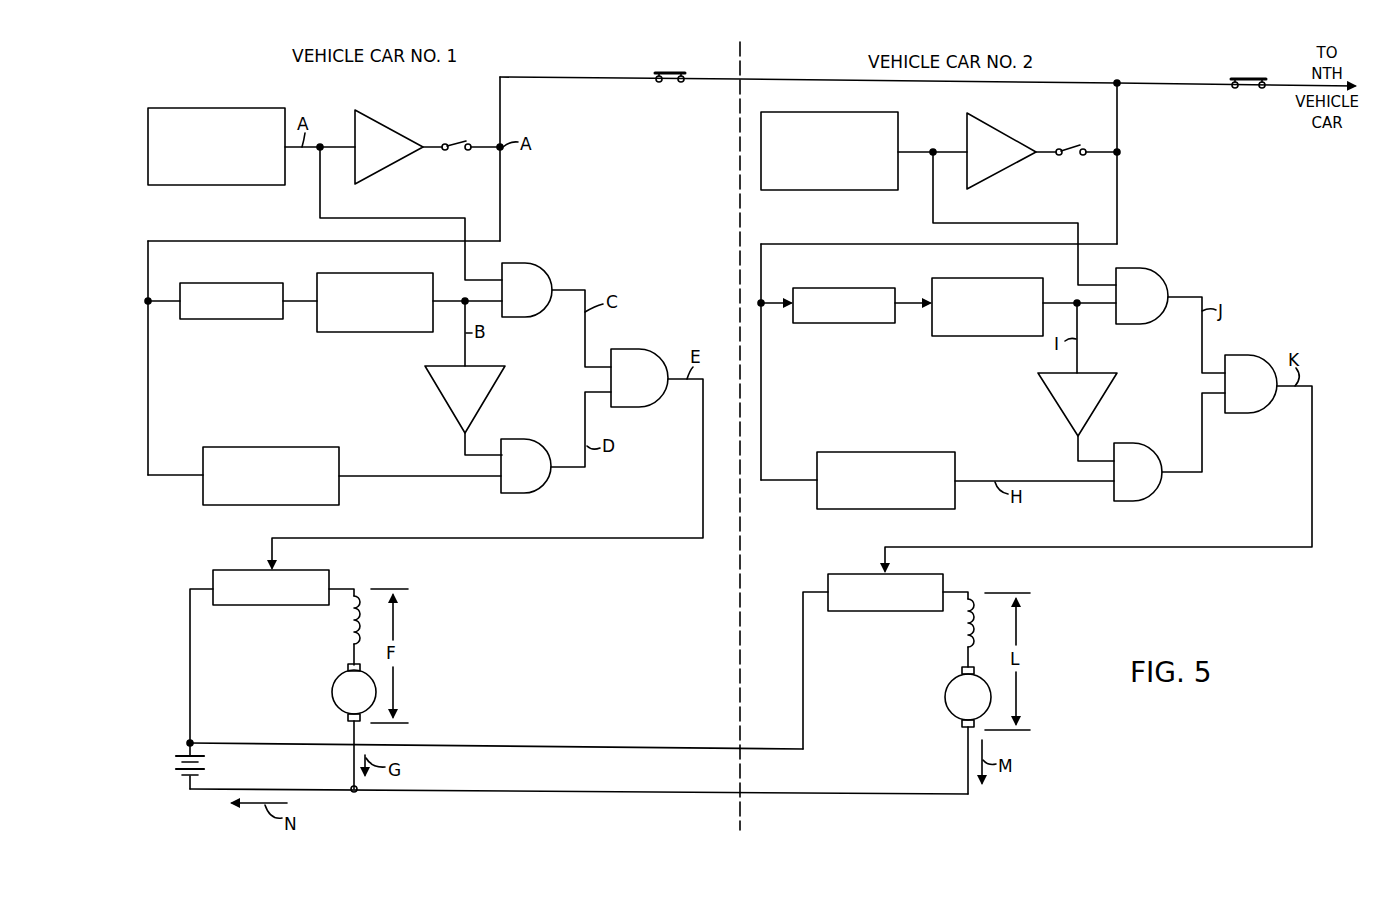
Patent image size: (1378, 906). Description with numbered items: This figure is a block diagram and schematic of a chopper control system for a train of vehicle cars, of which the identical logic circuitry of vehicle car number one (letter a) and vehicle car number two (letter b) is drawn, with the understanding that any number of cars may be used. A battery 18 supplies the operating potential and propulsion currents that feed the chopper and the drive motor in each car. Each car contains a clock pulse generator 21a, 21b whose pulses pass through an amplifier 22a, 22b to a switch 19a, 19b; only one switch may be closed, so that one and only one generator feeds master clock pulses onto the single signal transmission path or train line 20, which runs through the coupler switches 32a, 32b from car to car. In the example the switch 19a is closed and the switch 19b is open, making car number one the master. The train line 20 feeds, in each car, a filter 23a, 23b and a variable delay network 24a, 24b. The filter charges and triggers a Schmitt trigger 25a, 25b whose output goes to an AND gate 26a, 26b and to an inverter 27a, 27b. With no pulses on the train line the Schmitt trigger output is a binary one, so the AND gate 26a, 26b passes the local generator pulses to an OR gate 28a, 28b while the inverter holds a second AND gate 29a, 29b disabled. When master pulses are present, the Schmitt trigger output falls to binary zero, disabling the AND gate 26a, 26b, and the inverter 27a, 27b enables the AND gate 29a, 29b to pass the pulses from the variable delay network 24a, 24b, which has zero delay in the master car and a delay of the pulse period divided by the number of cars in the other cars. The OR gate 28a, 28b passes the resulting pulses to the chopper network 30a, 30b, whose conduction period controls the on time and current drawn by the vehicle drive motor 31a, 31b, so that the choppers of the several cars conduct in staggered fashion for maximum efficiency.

The battery 18 is at (174, 768).
The switch 19a is at (447, 142).
The switch 19b is at (1057, 146).
The single signal transmission path 20 is at (712, 78).
The clock pulse generator 21a is at (176, 108).
The clock pulse generator 21b is at (840, 112).
The amplifier 22a is at (398, 122).
The amplifier 22b is at (1004, 130).
The filter 23a is at (218, 319).
The filter 23b is at (838, 323).
The variable delay network 24a is at (236, 447).
The variable delay network 24b is at (852, 452).
The Schmitt trigger circuit 25a is at (396, 332).
The Schmitt trigger 25b is at (1000, 336).
The AND gate 26a is at (527, 263).
The AND gate 26b is at (1146, 268).
The inverter 27a is at (446, 402).
The inverter 27b is at (1057, 411).
The OR gate 28a is at (640, 349).
The OR gate 28b is at (1255, 355).
The AND gate 29a is at (541, 490).
The AND gate 29b is at (1148, 496).
The chopper network 30a is at (229, 570).
The chopper network 30b is at (852, 574).
The vehicle drive motor 31a is at (332, 690).
The vehicle drive motor 31b is at (944, 696).
The coupler switch 32a is at (665, 72).
The coupler switch 32b is at (1247, 78).